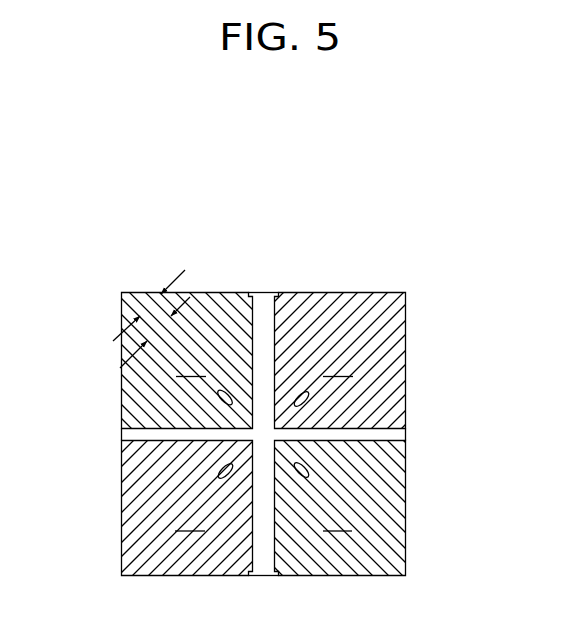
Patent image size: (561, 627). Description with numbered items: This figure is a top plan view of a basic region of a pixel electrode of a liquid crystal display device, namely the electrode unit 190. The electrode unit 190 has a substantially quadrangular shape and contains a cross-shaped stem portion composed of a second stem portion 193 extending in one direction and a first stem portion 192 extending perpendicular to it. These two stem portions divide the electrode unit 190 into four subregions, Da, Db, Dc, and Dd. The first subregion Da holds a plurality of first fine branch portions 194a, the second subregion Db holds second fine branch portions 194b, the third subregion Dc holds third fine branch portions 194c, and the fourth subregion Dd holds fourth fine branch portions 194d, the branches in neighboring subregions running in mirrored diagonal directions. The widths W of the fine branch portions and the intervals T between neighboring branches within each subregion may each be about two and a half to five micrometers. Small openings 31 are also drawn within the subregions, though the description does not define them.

The electrode unit 190 is at (358, 269).
The first stem portion 192 is at (276, 336).
The second stem portion 193 is at (306, 452).
The first fine branch portions 194a is at (211, 327).
The second fine branch portions 194b is at (372, 306).
The third fine branch portions 194c is at (155, 534).
The fourth fine branch portions 194d is at (378, 552).
The opening / via hole 31 is at (306, 398).